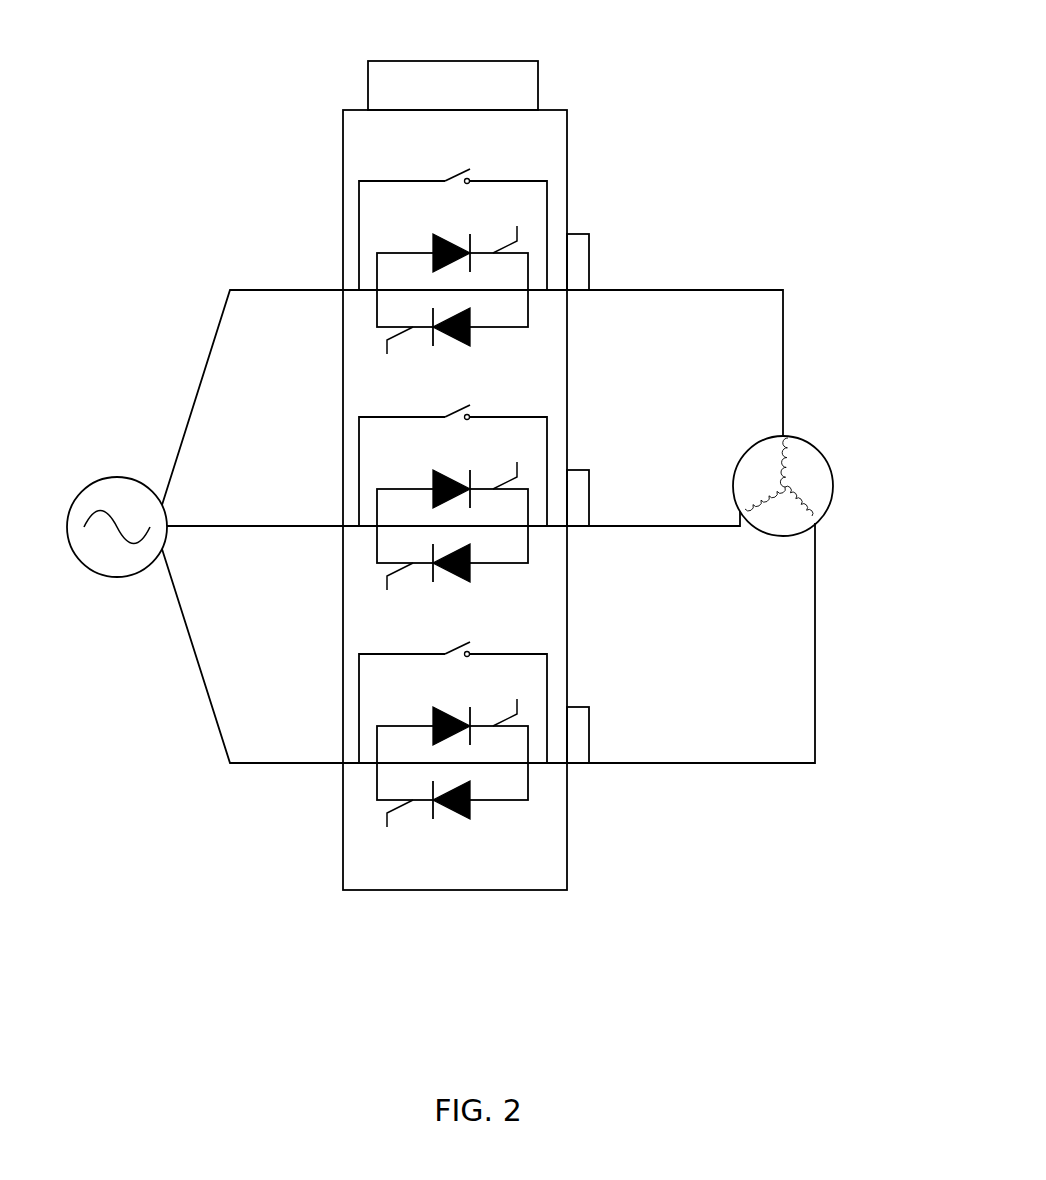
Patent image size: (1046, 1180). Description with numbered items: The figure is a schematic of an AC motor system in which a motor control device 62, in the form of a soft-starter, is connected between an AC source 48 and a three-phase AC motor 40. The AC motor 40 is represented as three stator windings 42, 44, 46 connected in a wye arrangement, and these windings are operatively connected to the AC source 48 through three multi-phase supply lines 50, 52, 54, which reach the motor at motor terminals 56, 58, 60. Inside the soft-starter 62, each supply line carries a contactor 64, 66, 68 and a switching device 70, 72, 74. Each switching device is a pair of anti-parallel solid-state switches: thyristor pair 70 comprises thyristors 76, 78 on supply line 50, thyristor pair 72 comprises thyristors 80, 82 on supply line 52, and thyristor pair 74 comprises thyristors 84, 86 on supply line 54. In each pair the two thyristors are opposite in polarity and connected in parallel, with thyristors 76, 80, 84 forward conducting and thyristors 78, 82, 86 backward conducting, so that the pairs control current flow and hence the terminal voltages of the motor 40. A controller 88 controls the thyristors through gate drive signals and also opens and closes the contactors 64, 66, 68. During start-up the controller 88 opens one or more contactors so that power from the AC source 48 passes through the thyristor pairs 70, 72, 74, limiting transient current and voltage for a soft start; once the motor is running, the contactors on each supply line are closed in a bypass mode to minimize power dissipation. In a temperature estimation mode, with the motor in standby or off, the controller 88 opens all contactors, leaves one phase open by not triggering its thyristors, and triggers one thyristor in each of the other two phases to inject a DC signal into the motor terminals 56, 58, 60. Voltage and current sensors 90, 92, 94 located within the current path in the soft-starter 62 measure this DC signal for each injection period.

The AC motor 40 is at (839, 460).
The winding 42 is at (790, 463).
The winding 44 is at (808, 503).
The winding 46 is at (760, 504).
The AC source 48 is at (80, 490).
The supply line 50 is at (287, 293).
The supply line 52 is at (287, 529).
The supply line 54 is at (286, 766).
The motor terminal 56 is at (643, 290).
The motor terminal 58 is at (653, 526).
The motor terminal 60 is at (653, 763).
The motor control device 62 is at (567, 197).
The contactor 64 is at (452, 174).
The contactor 66 is at (452, 410).
The contactor 68 is at (452, 647).
The switching device 70 is at (493, 287).
The switching device 72 is at (495, 524).
The switching device 74 is at (496, 761).
The thyristor 76 is at (433, 250).
The thyristor 78 is at (472, 313).
The thyristor 80 is at (433, 487).
The thyristor 82 is at (472, 553).
The thyristor 84 is at (433, 724).
The thyristor 86 is at (472, 790).
The controller 88 is at (475, 60).
The voltage and current sensor 90 is at (589, 248).
The voltage and current sensor 92 is at (589, 484).
The voltage and current sensor 94 is at (589, 720).